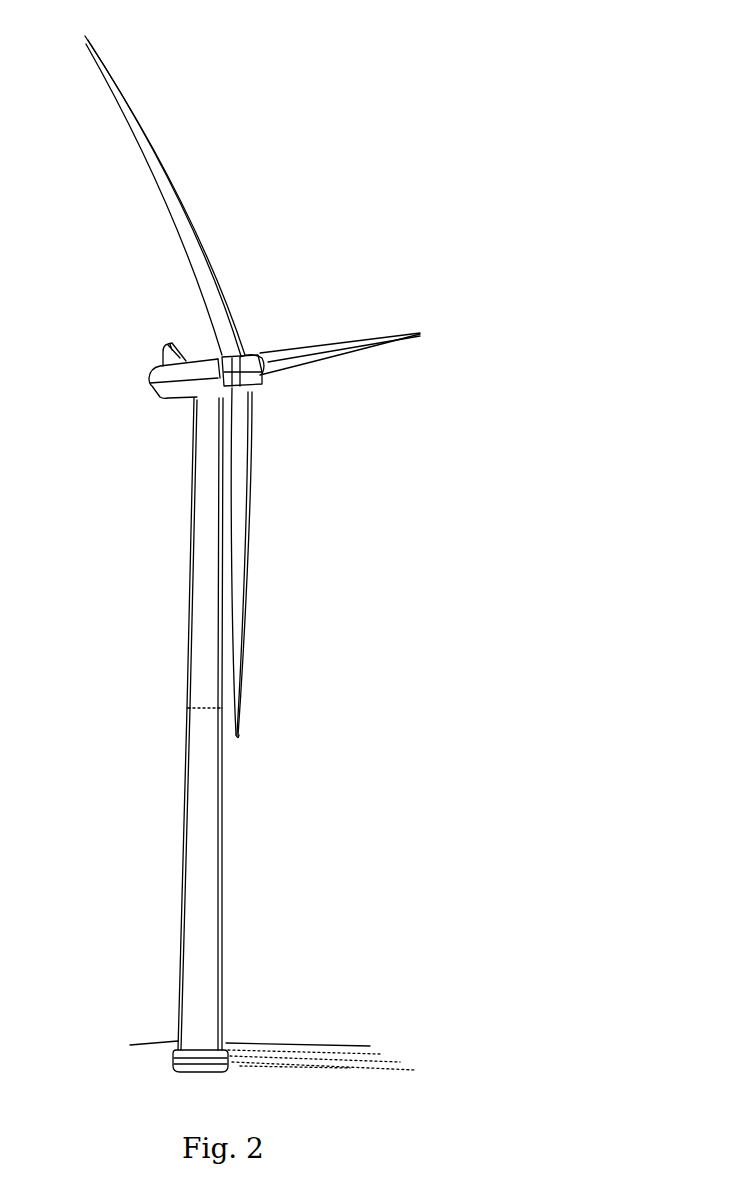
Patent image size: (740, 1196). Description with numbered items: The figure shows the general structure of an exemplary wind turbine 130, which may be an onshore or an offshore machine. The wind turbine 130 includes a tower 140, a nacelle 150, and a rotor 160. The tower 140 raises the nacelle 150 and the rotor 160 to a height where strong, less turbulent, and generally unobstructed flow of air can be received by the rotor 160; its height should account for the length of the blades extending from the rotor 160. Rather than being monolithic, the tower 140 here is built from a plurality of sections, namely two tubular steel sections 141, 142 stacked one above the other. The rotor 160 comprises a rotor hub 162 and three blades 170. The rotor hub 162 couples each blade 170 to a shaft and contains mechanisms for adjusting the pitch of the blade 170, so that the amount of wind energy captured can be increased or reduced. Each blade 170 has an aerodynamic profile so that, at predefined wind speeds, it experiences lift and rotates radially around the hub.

The wind turbine 130 is at (364, 233).
The tower 140 is at (184, 609).
The tubular steel section 141 is at (188, 880).
The tubular steel section 142 is at (194, 540).
The nacelle 150 is at (134, 384).
The rotor 160 is at (262, 383).
The rotor hub 162 is at (246, 358).
The blade 170 is at (118, 112).